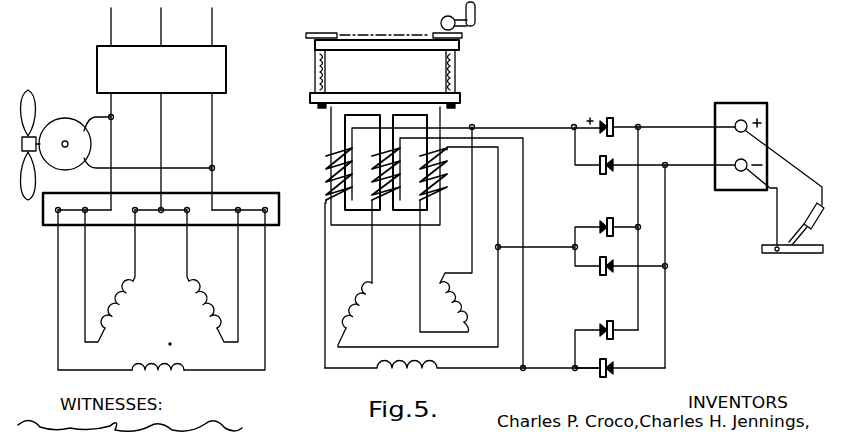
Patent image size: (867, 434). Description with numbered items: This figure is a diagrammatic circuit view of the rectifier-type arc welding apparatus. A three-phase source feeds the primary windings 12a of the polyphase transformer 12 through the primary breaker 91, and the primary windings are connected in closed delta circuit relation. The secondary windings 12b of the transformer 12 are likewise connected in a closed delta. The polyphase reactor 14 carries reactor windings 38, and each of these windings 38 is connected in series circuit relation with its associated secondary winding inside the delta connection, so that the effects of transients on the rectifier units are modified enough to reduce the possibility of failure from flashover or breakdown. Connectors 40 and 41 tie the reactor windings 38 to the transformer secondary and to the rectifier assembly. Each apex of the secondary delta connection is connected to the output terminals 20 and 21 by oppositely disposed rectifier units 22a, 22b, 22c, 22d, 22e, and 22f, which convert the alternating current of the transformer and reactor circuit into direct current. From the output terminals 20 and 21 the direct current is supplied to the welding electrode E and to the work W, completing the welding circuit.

The primary breaker 91 is at (226, 61).
The primary windings 12a is at (172, 377).
The polyphase reactor 14 is at (318, 137).
The reactor windings 38 is at (330, 166).
The connector 41 is at (452, 128).
The connector 40 is at (325, 272).
The polyphase transformer 12 is at (316, 299).
The secondary windings 12b is at (440, 374).
The rectifier unit 22a is at (615, 118).
The rectifier unit 22b is at (598, 170).
The rectifier unit 22c is at (606, 220).
The rectifier unit 22d is at (600, 274).
The rectifier unit 22e is at (603, 322).
The rectifier unit 22f is at (601, 376).
The output terminal 20 is at (745, 133).
The output terminal 21 is at (738, 172).
The welding electrode E is at (808, 211).
The work W is at (816, 254).